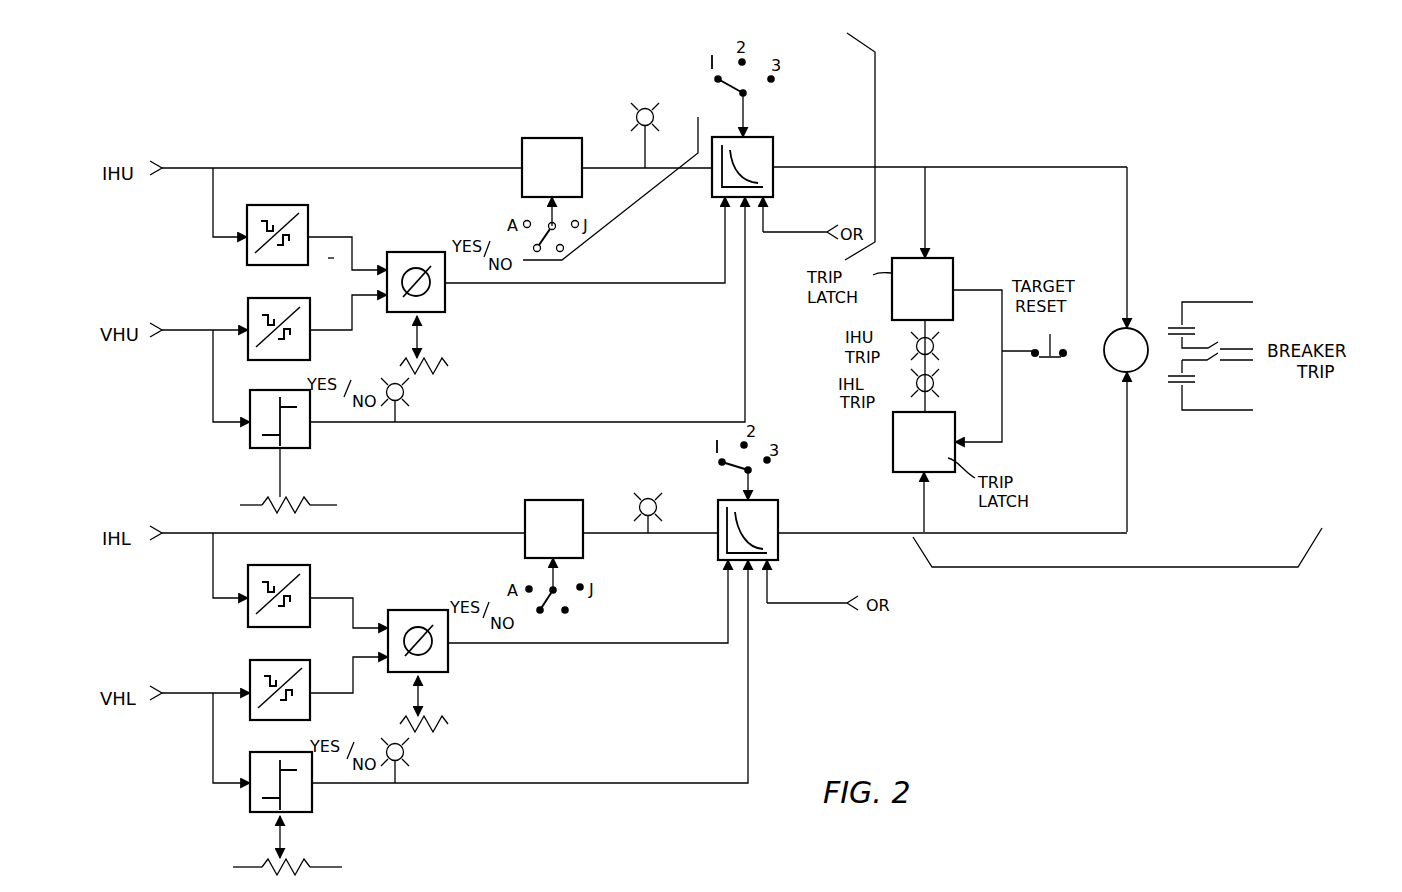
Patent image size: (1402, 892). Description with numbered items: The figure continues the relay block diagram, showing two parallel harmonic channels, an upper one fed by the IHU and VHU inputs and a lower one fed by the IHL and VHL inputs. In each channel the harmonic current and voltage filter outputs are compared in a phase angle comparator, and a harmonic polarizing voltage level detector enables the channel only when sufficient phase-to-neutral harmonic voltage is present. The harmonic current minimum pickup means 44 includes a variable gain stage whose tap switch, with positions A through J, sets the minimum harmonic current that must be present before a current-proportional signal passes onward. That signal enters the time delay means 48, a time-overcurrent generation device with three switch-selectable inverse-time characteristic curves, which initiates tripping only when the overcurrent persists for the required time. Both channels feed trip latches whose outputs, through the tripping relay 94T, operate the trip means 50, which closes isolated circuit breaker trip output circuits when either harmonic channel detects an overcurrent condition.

The harmonic current minimum pickup means 44 is at (610, 188).
The time delay means 48 is at (877, 146).
The trip means 50 is at (1117, 564).
The auxiliary tripping relay 94T is at (1109, 358).